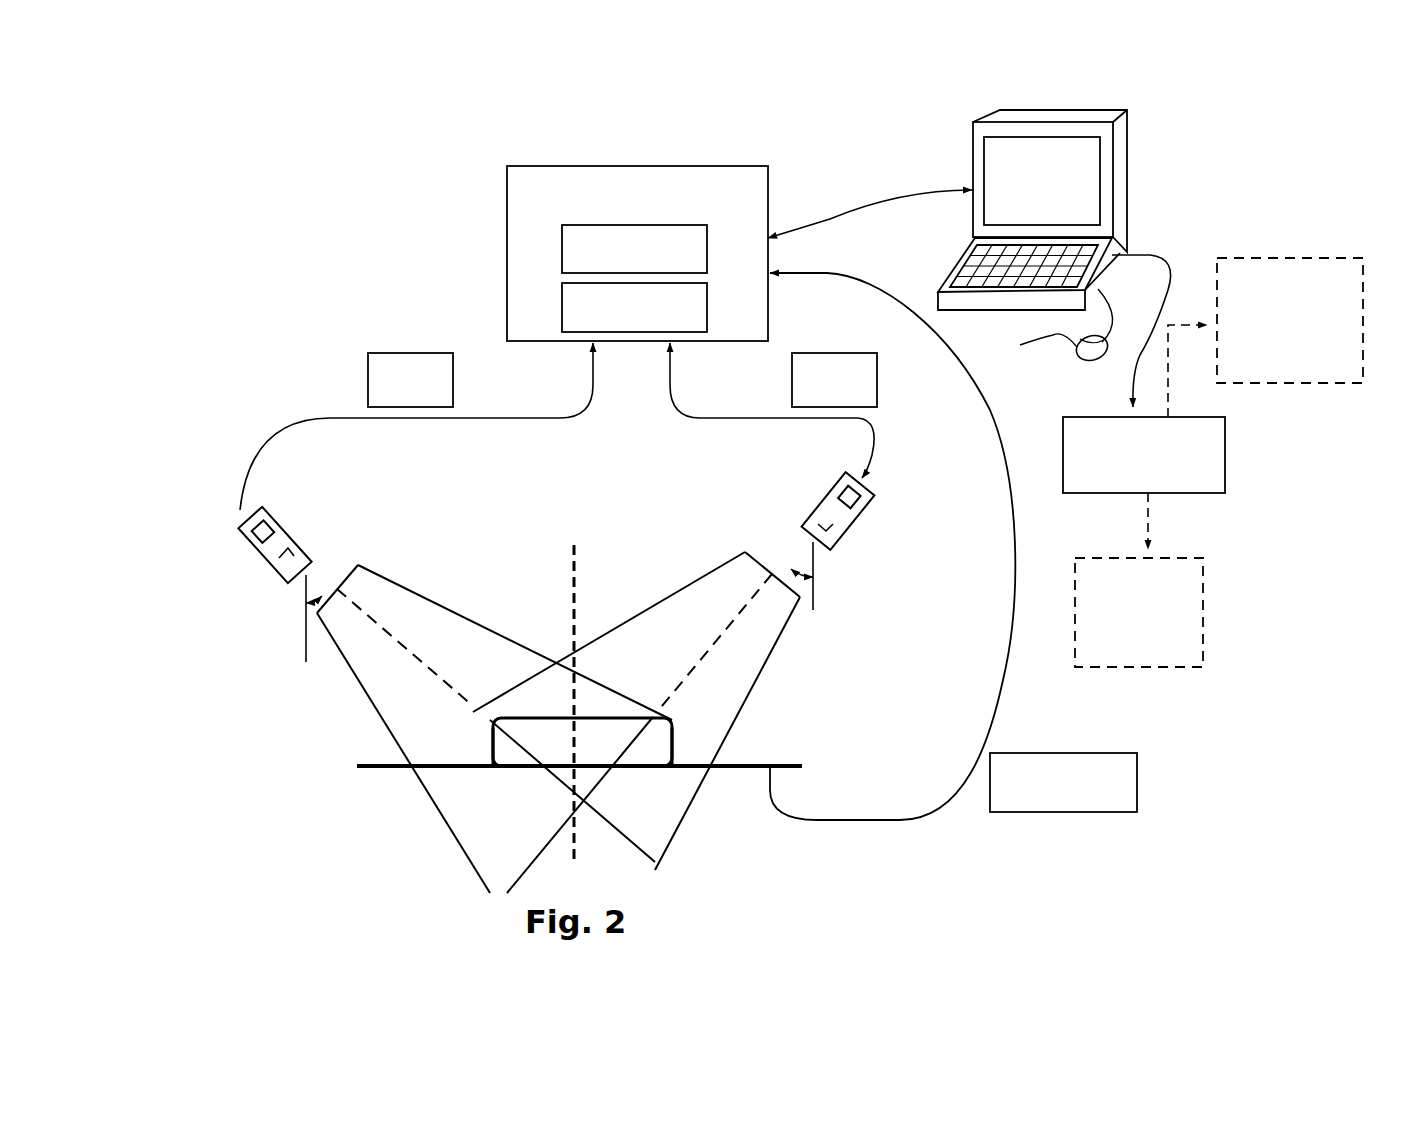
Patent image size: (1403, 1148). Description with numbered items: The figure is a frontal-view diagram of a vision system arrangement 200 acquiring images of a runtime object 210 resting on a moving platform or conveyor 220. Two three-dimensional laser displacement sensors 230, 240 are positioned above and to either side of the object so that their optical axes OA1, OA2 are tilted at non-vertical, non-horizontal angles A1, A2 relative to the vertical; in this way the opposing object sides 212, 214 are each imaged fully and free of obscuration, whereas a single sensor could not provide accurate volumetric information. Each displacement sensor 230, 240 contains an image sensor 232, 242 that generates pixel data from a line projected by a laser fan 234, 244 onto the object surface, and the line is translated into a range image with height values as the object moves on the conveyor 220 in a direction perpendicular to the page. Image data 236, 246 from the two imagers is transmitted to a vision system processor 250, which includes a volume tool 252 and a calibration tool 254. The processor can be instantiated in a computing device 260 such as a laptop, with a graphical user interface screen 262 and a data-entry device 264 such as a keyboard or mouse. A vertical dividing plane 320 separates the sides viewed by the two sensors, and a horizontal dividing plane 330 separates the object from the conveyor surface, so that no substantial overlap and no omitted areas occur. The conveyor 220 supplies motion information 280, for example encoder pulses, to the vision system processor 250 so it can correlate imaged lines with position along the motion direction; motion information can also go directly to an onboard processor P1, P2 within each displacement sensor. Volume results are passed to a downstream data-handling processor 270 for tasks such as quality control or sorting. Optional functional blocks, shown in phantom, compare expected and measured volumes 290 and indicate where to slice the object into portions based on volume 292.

The vision system arrangement 200 is at (789, 188).
The vision system processor 250 is at (507, 180).
The volume tool 252 is at (562, 248).
The calibration tool 254 is at (562, 302).
The image data 236 is at (427, 350).
The image data 246 is at (877, 382).
The computing device 260 is at (1015, 115).
The graphical user interface screen 262 is at (1000, 155).
The data-entry device 264 is at (1003, 272).
The slice object into portions functional block 292 is at (1233, 252).
The data-handling processor 270 is at (1137, 493).
The compare volumes functional block 290 is at (1072, 559).
The motion information 280 is at (1080, 753).
The horizontal dividing plane 330 is at (770, 760).
The conveyor 220 is at (391, 771).
The runtime object 210 is at (582, 742).
The first side of object 212 is at (492, 745).
The second side of object 214 is at (679, 728).
The vertical dividing plane 320 is at (570, 590).
The first displacement sensor 230 is at (285, 530).
The image sensor 232 is at (279, 553).
The laser fan 234 is at (428, 600).
The second displacement sensor 240 is at (820, 503).
The image sensor 242 is at (833, 528).
The laser fan 244 is at (772, 652).
The onboard processor P1 is at (272, 522).
The onboard processor P2 is at (856, 503).
The optical axis angle A1 is at (310, 597).
The optical axis angle A2 is at (807, 582).
The optical axis OA1 is at (326, 584).
The optical axis OA2 is at (773, 555).